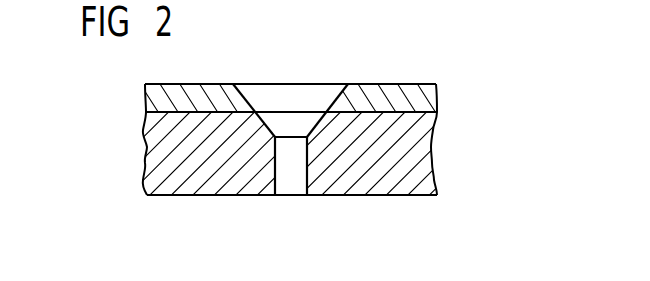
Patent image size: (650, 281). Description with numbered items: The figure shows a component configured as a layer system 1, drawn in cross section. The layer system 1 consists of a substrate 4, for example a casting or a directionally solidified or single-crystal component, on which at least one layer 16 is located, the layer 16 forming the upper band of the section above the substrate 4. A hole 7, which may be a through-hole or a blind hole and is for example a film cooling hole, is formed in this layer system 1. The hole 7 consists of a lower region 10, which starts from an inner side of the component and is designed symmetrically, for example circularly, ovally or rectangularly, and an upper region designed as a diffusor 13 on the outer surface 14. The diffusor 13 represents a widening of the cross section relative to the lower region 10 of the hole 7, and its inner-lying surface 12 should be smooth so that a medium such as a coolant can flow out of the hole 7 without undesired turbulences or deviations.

The layer system 1 is at (122, 162).
The substrate 4 is at (422, 140).
The hole 7 is at (293, 103).
The lower region 10 is at (290, 181).
The inner-lying surface 12 is at (322, 102).
The diffusor 13 is at (262, 100).
The outer surface 14 is at (407, 96).
The layer 16 is at (420, 96).